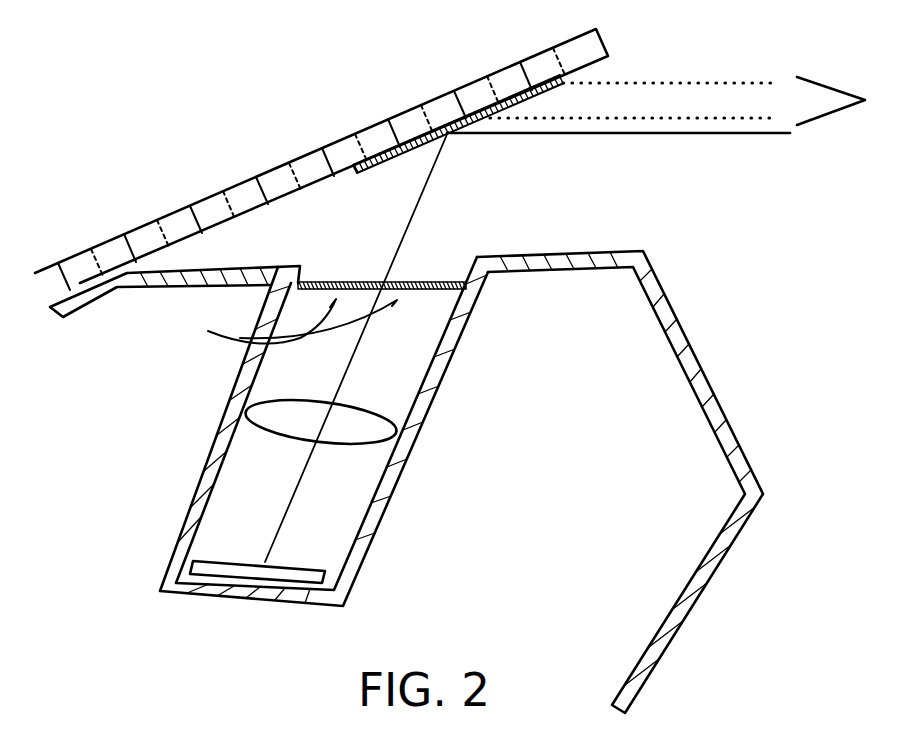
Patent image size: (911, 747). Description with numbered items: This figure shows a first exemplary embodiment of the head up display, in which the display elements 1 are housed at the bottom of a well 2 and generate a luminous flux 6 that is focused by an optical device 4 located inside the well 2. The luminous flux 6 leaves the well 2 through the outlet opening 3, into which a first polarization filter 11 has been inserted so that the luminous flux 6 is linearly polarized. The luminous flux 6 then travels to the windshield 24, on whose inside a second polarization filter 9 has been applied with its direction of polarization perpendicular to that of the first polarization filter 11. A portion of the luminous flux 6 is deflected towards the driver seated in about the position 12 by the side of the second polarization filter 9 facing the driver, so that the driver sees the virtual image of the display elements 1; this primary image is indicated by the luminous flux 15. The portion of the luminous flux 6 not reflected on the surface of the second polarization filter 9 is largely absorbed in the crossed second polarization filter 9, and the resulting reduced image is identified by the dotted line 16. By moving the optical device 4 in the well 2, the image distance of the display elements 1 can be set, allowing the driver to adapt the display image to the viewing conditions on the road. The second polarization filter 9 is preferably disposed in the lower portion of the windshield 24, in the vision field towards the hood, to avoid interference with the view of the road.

The display elements 1 is at (343, 587).
The well 2 is at (323, 531).
The outlet opening 3 is at (294, 326).
The optical device 4 is at (348, 424).
The luminous flux 6 is at (350, 359).
The second polarization filter 9 is at (353, 167).
The first polarization filter 11 is at (427, 279).
The observer position 12 is at (820, 88).
The luminous flux of the primary image 15 is at (644, 134).
The dotted line of the reduced image 16 is at (643, 117).
The windshield 24 is at (547, 53).